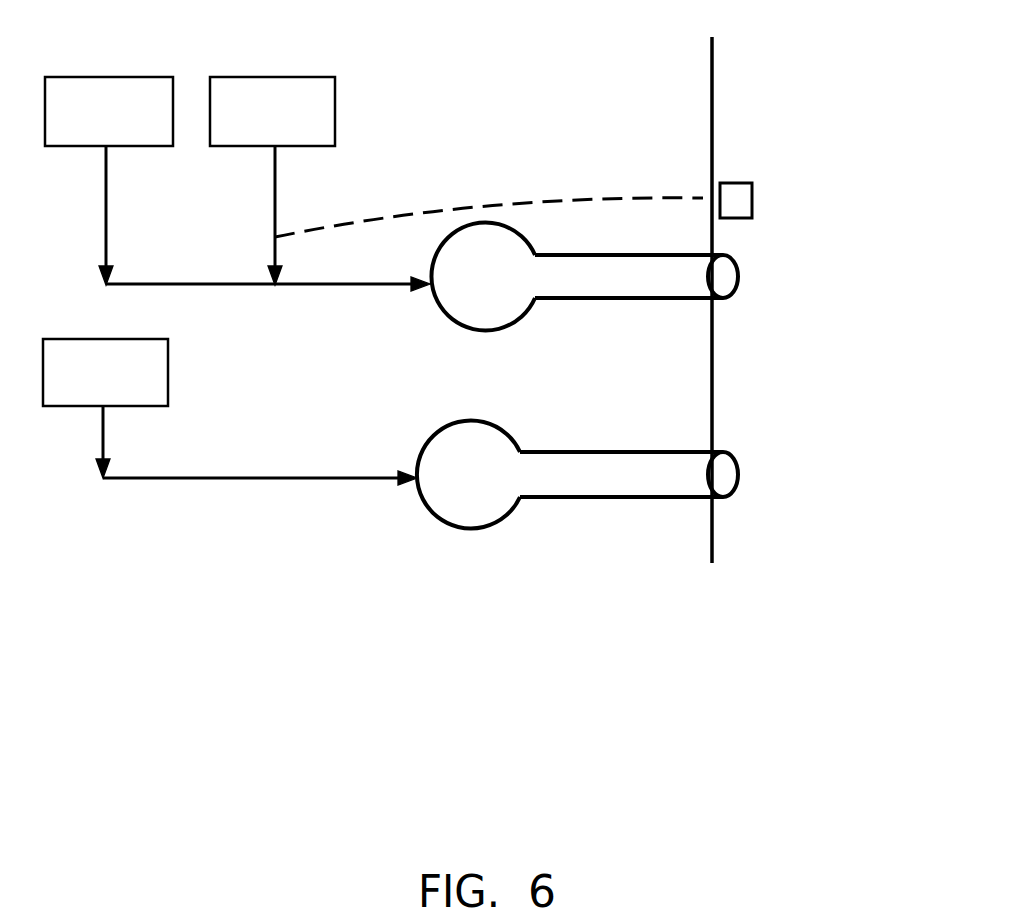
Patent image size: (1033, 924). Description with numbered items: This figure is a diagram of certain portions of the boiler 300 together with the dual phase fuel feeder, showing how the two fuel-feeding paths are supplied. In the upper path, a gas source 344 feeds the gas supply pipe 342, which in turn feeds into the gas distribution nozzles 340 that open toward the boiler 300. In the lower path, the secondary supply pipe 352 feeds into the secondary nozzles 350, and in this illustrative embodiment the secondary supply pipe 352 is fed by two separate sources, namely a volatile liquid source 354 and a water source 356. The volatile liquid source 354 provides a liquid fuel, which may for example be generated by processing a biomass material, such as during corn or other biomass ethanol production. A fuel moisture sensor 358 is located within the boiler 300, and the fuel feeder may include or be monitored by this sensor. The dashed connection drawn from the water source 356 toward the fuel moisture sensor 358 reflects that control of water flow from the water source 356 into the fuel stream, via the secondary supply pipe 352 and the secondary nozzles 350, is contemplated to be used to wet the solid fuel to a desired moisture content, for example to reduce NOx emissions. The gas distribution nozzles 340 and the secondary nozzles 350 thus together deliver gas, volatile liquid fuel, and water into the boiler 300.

The boiler 300 is at (837, 37).
The gas distribution nozzles 340 is at (620, 477).
The gas supply pipe 342 is at (423, 508).
The gas source 344 is at (105, 408).
The secondary nozzles 350 is at (623, 272).
The secondary supply pipe 352 is at (446, 326).
The volatile liquid source 354 is at (109, 181).
The water source 356 is at (456, 181).
The fuel moisture sensor 358 is at (752, 195).